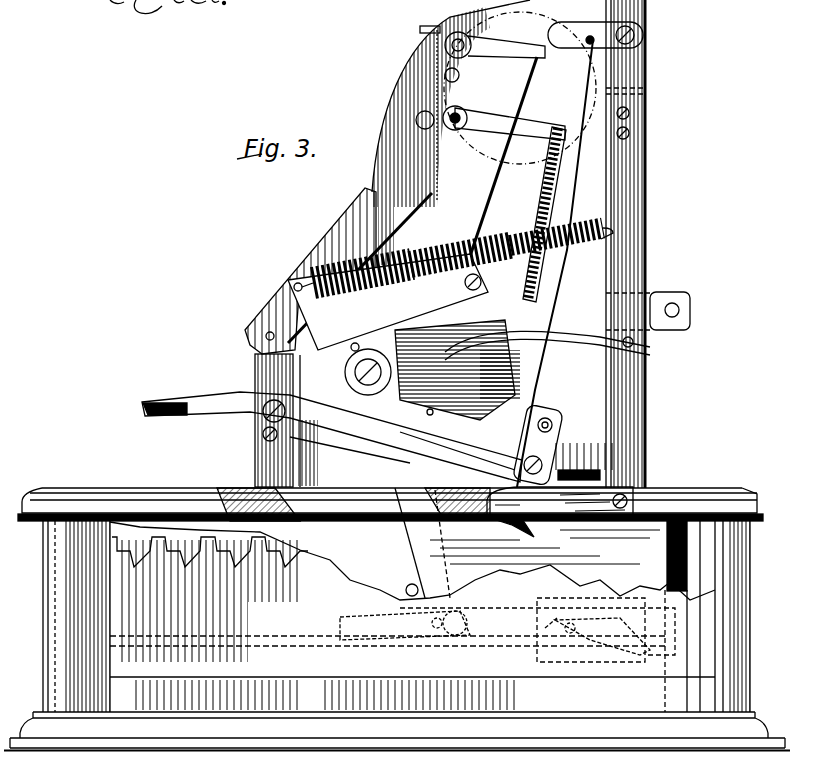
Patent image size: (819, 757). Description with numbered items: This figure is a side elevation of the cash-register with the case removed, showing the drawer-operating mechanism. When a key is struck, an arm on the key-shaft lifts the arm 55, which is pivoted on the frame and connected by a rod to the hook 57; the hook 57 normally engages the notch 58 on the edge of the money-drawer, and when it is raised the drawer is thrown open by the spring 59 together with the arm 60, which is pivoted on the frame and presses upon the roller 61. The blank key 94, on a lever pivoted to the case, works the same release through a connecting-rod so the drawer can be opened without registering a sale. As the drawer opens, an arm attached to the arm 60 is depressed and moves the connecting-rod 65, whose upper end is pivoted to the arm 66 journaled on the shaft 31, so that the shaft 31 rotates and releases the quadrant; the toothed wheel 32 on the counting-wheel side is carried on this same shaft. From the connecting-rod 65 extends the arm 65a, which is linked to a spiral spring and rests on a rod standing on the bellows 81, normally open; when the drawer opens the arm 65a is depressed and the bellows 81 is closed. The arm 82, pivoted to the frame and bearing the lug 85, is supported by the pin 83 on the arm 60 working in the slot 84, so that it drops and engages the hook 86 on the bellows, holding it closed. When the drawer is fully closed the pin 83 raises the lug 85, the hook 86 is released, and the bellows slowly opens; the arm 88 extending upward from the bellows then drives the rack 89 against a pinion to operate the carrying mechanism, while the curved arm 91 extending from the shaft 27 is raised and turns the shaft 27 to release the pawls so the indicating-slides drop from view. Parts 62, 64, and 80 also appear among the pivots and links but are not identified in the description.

The pivot stud 62 is at (458, 37).
The arm 64 is at (506, 47).
The spring 59 is at (455, 99).
The roller 80 is at (415, 120).
The arm 65a is at (510, 126).
The connecting-rod 65 is at (499, 168).
The arm 66 is at (555, 263).
The toothed wheel 32 is at (544, 214).
The arm 55 is at (595, 34).
The rack 89 is at (458, 259).
The arm 88 is at (363, 268).
The pin 83 is at (388, 302).
The hook 86 is at (455, 370).
The bellows 81 is at (350, 372).
The shaft 31 is at (505, 375).
The blank key 94 is at (332, 434).
The slot 84 is at (350, 439).
The arm 82 is at (457, 439).
The lug 85 is at (537, 445).
The hook 57 is at (560, 503).
The notch 58 is at (520, 532).
The arm 60 is at (353, 543).
The roller 61 is at (405, 605).
The curved arm 91 is at (547, 339).
The shaft 27 is at (650, 319).